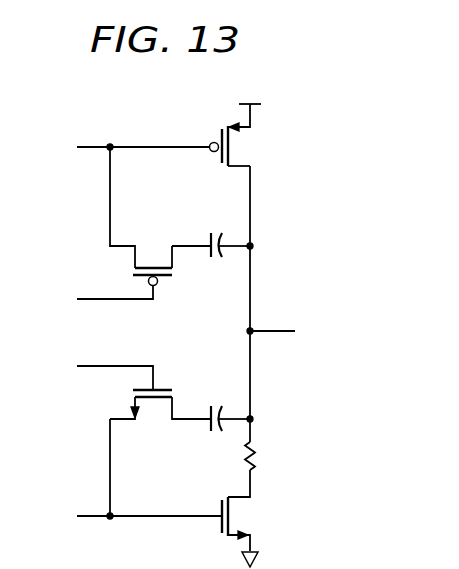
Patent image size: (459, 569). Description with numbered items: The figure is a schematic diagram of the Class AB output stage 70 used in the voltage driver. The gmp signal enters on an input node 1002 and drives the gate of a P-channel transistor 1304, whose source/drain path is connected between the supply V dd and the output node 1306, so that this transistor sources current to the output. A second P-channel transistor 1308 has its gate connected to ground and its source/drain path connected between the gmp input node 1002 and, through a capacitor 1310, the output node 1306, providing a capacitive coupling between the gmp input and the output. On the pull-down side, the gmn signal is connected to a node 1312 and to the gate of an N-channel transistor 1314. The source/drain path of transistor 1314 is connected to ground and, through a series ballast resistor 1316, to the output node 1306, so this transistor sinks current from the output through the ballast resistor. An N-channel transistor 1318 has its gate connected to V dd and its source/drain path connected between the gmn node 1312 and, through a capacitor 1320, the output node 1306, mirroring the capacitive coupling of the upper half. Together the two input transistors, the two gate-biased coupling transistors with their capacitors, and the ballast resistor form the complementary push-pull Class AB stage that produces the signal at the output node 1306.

The gain stage circuit 70 is at (277, 72).
The GMP input node 1002 is at (95, 146).
The P-channel transistor 1304 is at (220, 138).
The capacitor 1310 is at (212, 232).
The P-channel transistor 1308 is at (167, 282).
The output node 1306 is at (272, 330).
The N-channel transistor 1318 is at (165, 388).
The capacitor 1320 is at (213, 432).
The series ballast resistor 1316 is at (256, 456).
The node 1312 is at (92, 520).
The N-channel transistor 1314 is at (219, 531).